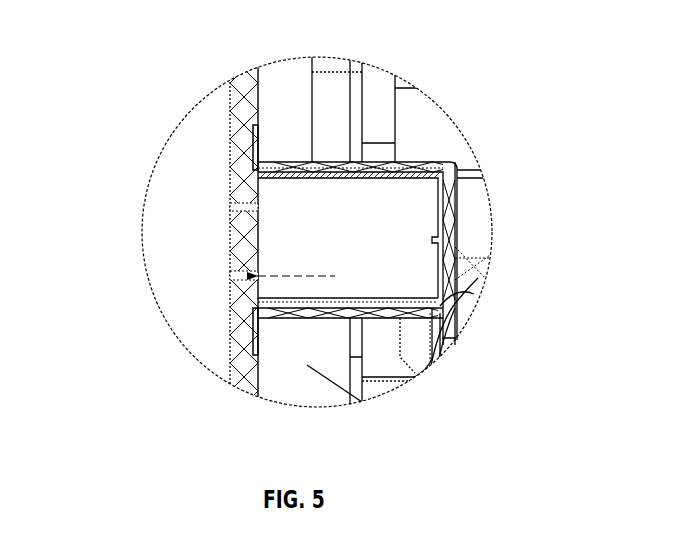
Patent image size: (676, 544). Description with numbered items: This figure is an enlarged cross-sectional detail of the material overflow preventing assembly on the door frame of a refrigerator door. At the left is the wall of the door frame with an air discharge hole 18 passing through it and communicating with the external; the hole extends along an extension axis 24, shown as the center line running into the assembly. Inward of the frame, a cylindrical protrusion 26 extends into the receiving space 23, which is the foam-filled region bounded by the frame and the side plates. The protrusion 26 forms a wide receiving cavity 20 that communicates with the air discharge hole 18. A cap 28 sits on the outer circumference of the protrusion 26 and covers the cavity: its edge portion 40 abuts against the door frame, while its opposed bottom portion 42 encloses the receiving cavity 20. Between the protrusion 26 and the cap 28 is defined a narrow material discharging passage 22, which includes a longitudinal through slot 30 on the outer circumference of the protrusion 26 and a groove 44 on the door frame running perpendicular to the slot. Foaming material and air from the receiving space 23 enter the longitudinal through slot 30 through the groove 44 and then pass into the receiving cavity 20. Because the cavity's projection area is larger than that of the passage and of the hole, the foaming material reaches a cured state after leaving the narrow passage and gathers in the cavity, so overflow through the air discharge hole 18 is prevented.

The air discharge hole 18 is at (230, 210).
The receiving cavity 20 is at (326, 213).
The material discharging passage 22 is at (109, 320).
The receiving space 23 is at (313, 318).
The extension axis 24 is at (232, 249).
The protrusion 26 is at (393, 177).
The cap 28 is at (372, 320).
The longitudinal through slot 30 is at (232, 298).
The edge portion 40 is at (275, 320).
The bottom portion 42 is at (470, 296).
The groove 44 is at (250, 337).